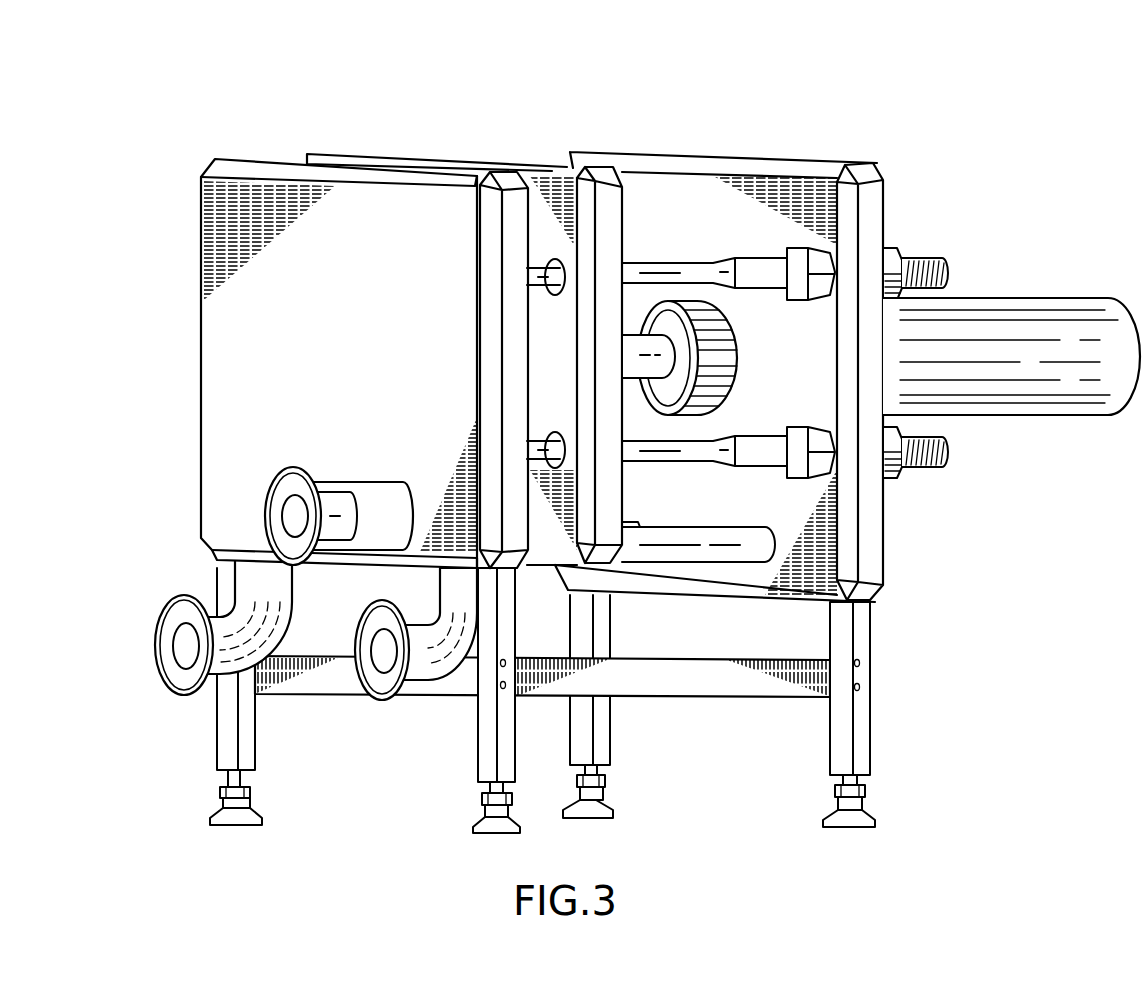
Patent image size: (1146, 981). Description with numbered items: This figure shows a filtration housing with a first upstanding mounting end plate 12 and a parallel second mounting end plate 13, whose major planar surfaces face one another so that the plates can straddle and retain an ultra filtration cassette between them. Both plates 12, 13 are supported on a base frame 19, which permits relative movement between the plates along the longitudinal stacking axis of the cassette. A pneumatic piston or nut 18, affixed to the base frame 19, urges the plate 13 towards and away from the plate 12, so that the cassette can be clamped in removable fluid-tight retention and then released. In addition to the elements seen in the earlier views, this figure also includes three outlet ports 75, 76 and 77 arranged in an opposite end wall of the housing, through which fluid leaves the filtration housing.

The mounting end plate 12 is at (230, 157).
The mounting end plate 13 is at (745, 157).
The pneumatic piston 18 is at (1030, 297).
The base frame 19 is at (873, 715).
The outlet port 75 is at (378, 700).
The outlet port 76 is at (155, 648).
The outlet port 77 is at (300, 468).